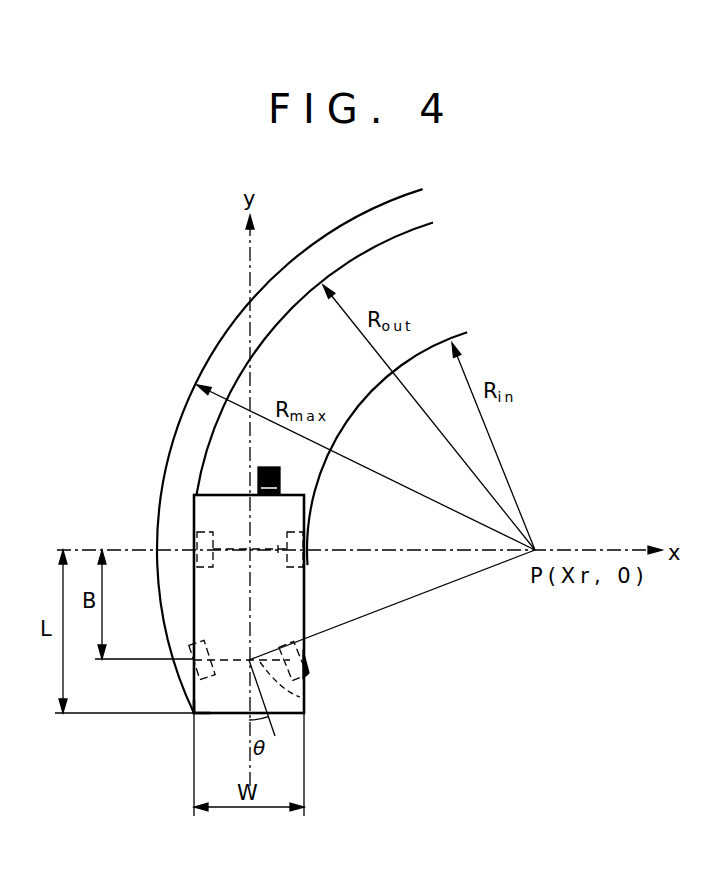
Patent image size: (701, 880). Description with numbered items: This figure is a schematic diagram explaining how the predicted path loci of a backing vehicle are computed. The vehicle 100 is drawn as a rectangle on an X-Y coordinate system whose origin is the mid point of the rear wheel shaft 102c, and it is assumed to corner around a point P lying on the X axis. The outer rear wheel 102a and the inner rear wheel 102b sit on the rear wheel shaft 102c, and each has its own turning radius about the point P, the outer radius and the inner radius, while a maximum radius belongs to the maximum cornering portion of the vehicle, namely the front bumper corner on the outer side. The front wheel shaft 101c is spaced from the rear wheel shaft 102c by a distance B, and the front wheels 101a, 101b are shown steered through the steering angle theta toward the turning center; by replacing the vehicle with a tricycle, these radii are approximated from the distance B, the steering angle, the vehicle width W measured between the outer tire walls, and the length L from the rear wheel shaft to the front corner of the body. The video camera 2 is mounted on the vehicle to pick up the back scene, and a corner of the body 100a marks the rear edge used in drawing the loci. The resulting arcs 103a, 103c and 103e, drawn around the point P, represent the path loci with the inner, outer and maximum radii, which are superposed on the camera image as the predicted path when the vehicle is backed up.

The video camera 2 is at (258, 469).
The vehicle 100 is at (303, 704).
The rear left corner of vehicle 100a is at (190, 716).
The left rear steered wheel 101a is at (192, 650).
The right rear steered wheel 101b is at (307, 672).
The front wheel shaft 101c is at (303, 697).
The outer rear wheel 102a is at (194, 540).
The inner rear wheel 102b is at (300, 566).
The rear wheel shaft 102c is at (284, 548).
The inner turning trajectory 103a is at (437, 340).
The outer wheel turning trajectory 103c is at (412, 234).
The maximum outer turning trajectory 103e is at (401, 193).